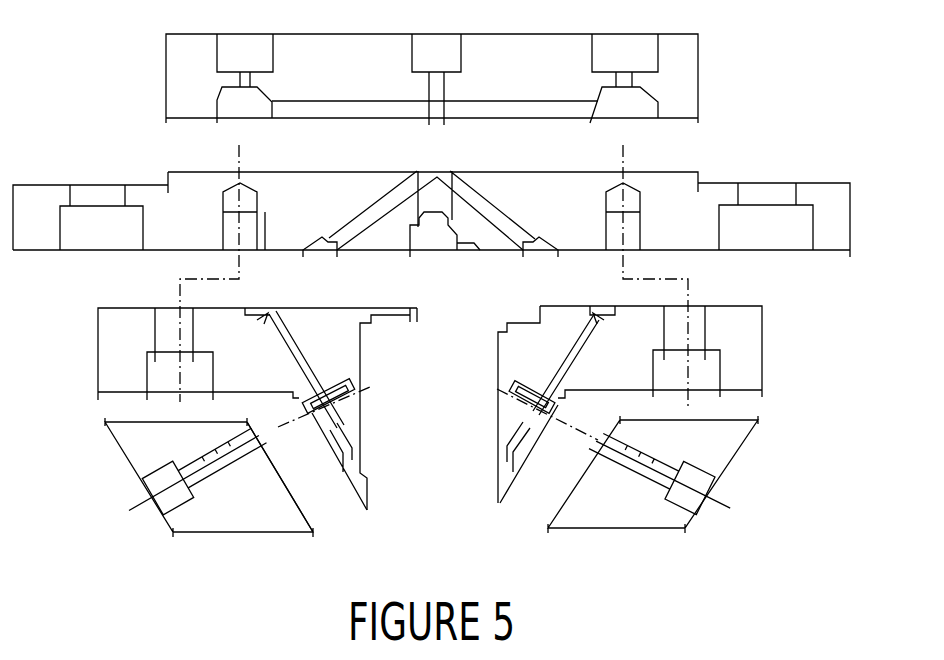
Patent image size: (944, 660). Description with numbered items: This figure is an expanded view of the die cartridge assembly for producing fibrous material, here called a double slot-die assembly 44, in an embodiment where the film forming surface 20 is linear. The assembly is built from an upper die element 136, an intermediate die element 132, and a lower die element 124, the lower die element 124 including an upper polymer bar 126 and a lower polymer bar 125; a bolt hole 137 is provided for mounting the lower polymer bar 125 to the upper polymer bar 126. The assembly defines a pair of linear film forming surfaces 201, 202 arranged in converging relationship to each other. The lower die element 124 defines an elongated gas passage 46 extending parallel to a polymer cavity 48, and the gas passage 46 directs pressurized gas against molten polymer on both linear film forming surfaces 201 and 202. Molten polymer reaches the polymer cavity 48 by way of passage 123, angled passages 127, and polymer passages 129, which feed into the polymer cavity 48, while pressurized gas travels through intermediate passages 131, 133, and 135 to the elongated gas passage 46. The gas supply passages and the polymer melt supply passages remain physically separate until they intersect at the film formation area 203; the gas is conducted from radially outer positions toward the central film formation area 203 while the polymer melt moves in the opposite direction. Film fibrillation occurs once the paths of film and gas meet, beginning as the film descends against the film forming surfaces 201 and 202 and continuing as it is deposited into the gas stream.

The double slot-die assembly 44 is at (124, 73).
The upper die element 136 is at (692, 72).
The intermediate passage 131 is at (263, 60).
The intermediate passage 133 is at (306, 103).
The passage 123 is at (435, 87).
The intermediate die element 132 is at (840, 210).
The angled passages 127 is at (488, 208).
The polymer passages 129 is at (540, 240).
The intermediate passage 135 is at (430, 203).
The lower die element 124 is at (53, 548).
The upper polymer bar 126 is at (751, 376).
The polymer cavity 48 is at (277, 356).
The elongated gas passage 46 is at (443, 367).
The film formation area 203 is at (342, 515).
The lower polymer bar 125 is at (217, 523).
The film forming surface 20 is at (311, 524).
The linear film forming surface 201 is at (296, 512).
The bolt hole 137 is at (176, 503).
The linear film forming surface 202 is at (559, 513).